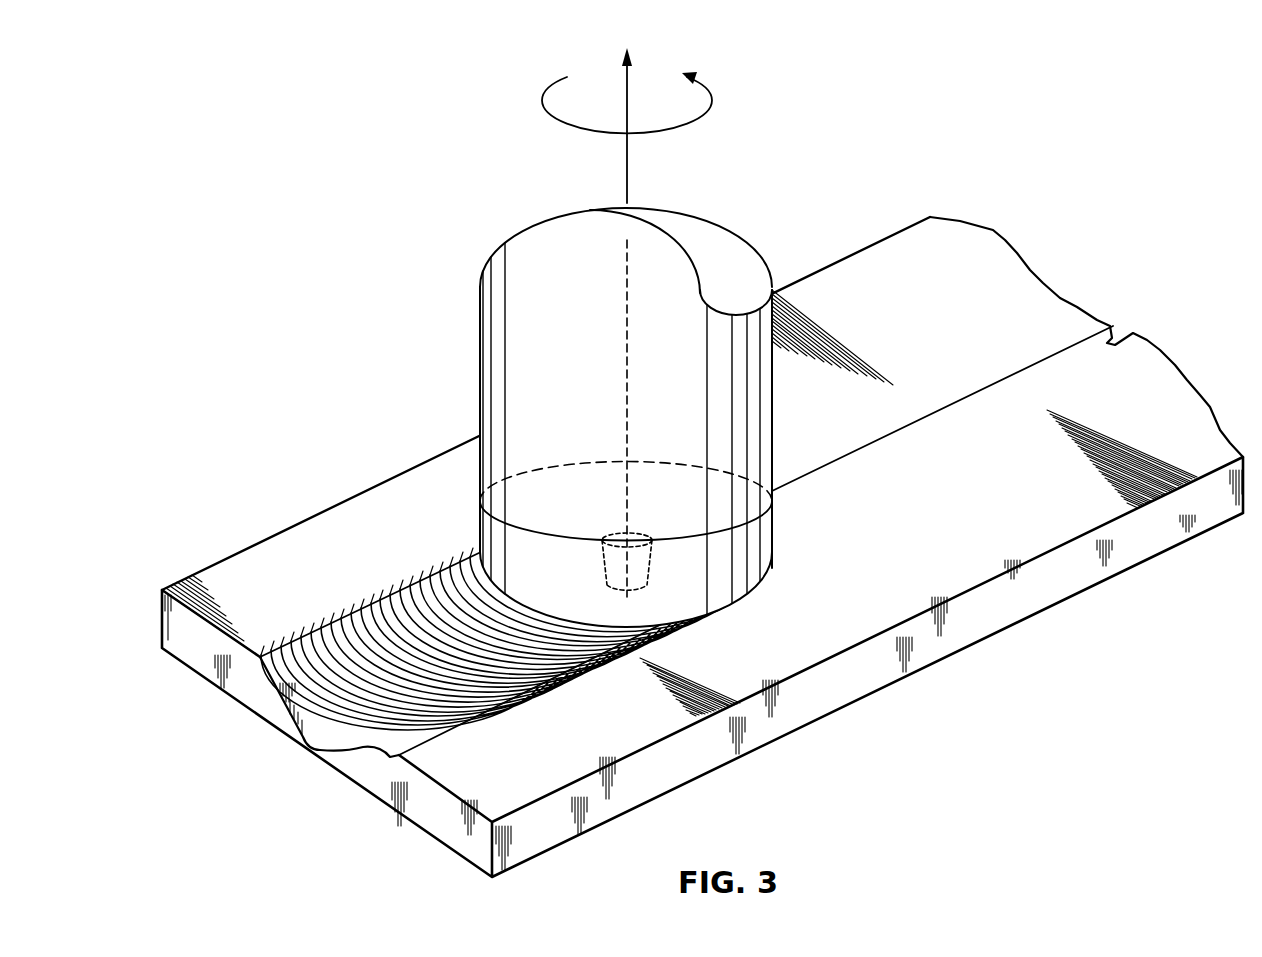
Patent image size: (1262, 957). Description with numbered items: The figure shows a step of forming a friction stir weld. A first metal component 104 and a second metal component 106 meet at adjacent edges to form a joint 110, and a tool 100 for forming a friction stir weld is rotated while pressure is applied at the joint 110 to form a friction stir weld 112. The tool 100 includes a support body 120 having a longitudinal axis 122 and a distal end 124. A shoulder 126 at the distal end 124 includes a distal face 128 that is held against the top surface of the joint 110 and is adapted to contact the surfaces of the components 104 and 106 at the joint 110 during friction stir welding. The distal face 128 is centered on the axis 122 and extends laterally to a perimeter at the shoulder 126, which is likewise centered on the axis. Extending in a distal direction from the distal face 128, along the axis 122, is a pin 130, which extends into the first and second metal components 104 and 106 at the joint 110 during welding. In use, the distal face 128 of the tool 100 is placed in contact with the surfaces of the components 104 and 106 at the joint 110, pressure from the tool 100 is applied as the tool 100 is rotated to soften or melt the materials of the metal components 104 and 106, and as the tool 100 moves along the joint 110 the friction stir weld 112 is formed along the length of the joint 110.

The tool 100 is at (594, 338).
The first metal component 104 is at (935, 320).
The second metal component 106 is at (982, 465).
The joint 110 is at (1113, 326).
The friction stir weld 112 is at (268, 748).
The support body 120 is at (565, 277).
The longitudinal axis 122 is at (627, 309).
The distal end 124 is at (402, 515).
The shoulder 126 is at (762, 585).
The distal face 128 is at (772, 617).
The pin 130 is at (640, 553).